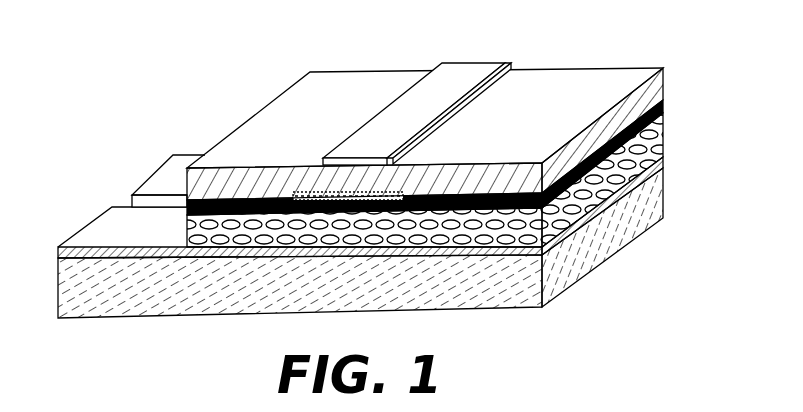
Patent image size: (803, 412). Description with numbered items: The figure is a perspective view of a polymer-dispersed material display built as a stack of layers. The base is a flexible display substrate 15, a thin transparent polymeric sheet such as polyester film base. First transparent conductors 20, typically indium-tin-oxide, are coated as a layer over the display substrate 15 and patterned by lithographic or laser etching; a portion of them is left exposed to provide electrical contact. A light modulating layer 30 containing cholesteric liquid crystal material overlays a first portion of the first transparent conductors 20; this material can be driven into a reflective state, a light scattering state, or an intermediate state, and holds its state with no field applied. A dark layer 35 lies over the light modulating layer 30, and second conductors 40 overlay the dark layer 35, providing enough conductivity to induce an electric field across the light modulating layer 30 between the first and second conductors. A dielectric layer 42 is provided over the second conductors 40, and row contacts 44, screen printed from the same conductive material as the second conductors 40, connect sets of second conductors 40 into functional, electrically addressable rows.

The display substrate 15 is at (620, 250).
The first transparent conductors 20 is at (172, 173).
The light modulating layer 30 is at (665, 129).
The dark layer 35 is at (666, 101).
The second conductors 40 is at (302, 192).
The dielectric layer 42 is at (360, 85).
The row contacts 44 is at (467, 75).